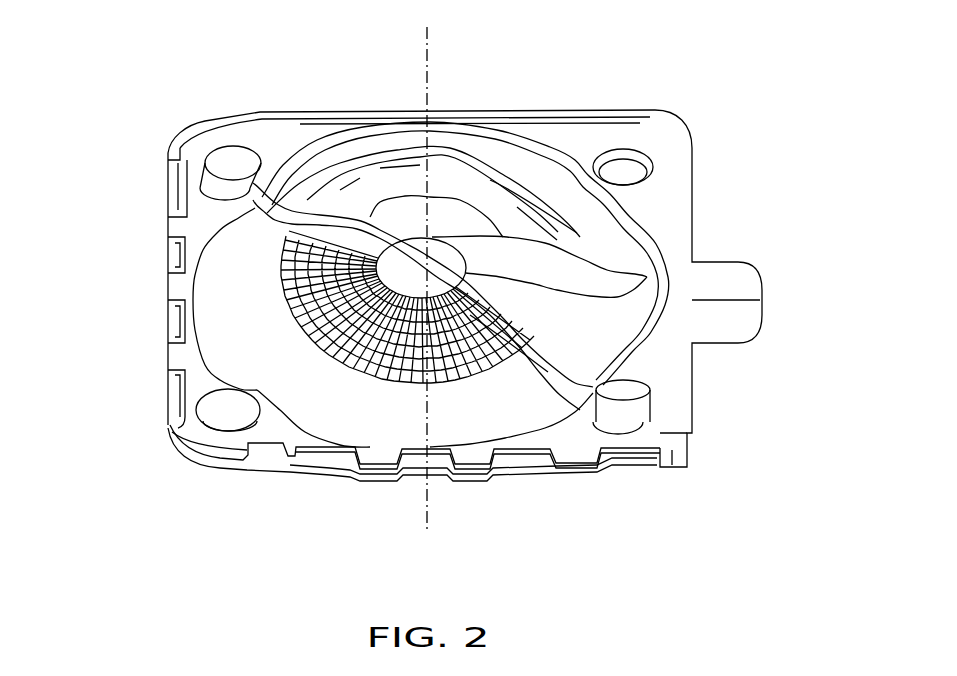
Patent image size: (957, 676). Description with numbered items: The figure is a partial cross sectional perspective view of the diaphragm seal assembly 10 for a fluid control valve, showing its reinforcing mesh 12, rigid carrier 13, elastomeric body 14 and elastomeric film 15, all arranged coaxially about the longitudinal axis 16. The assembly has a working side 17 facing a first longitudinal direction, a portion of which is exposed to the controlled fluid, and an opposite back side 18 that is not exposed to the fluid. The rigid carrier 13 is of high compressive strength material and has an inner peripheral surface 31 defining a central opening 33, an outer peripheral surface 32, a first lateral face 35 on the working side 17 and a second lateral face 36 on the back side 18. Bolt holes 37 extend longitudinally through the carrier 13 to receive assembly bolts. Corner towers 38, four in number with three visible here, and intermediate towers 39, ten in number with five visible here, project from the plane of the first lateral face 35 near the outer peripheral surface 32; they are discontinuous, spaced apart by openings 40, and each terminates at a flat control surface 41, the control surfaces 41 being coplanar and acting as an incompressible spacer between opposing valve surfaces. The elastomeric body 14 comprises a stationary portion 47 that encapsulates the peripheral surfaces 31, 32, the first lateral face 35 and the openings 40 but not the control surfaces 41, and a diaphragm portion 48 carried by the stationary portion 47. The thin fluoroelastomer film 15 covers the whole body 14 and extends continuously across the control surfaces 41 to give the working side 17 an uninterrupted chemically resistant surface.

The diaphragm seal assembly 10 is at (590, 106).
The reinforcing mesh 12 is at (427, 446).
The rigid carrier 13 is at (318, 440).
The elastomeric body 14 is at (287, 223).
The elastomeric film 15 is at (375, 205).
The longitudinal axis 16 is at (430, 43).
The working side 17 is at (562, 318).
The back side 18 is at (550, 373).
The inner peripheral surface 31 is at (220, 233).
The outer peripheral surface 32 is at (517, 467).
The central opening 33 is at (290, 352).
The first lateral face 35 is at (168, 377).
The second lateral face 36 is at (607, 462).
The bolt holes 37 is at (627, 160).
The corner towers 38 is at (167, 173).
The intermediate towers 39 is at (168, 330).
The openings 40 is at (168, 227).
The control surfaces 41 is at (178, 148).
The stationary portion 47 is at (270, 140).
The diaphragm portion 48 is at (467, 188).